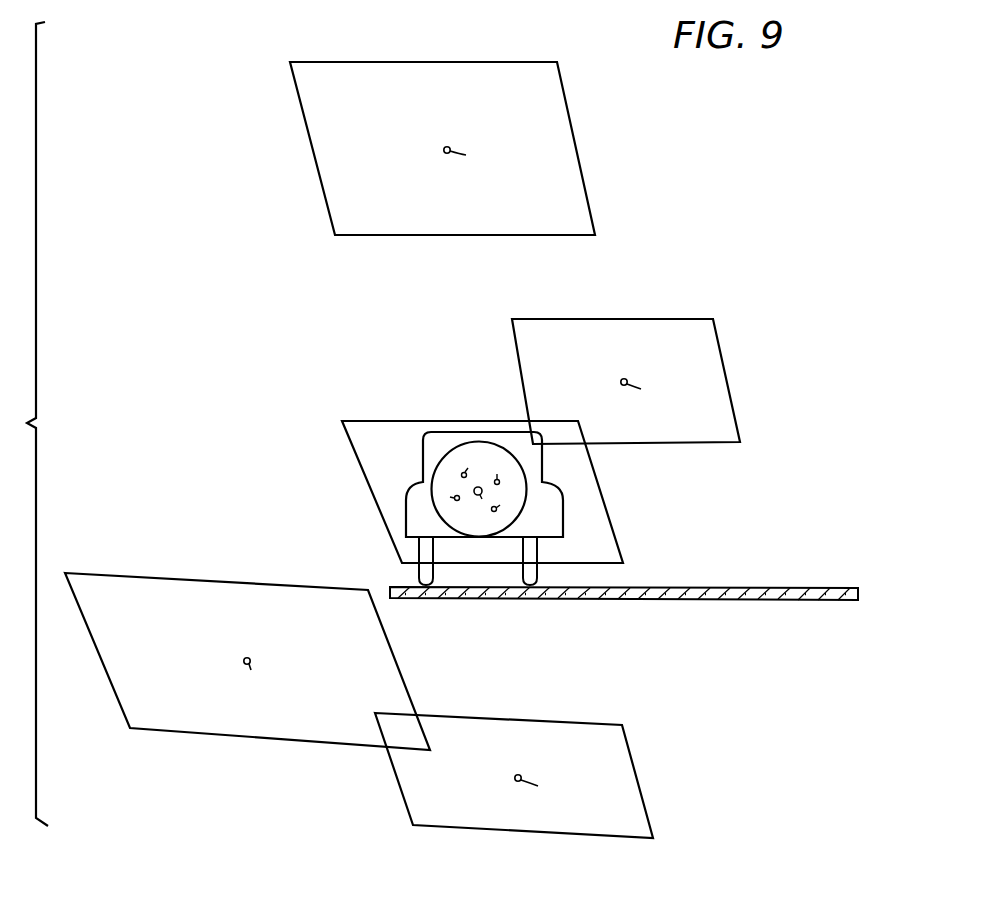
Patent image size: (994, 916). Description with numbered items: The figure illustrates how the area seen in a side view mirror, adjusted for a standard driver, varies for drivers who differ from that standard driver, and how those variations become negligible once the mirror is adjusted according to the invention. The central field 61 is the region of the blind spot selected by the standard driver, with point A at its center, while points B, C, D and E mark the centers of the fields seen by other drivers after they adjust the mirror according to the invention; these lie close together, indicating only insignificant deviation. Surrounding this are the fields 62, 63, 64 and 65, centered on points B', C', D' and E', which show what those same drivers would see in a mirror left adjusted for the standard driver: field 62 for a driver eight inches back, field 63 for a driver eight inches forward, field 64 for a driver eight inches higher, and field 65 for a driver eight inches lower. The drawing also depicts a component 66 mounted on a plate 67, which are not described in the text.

The field 61 is at (362, 476).
The field of view 62 is at (720, 347).
The field of view 63 is at (213, 737).
The field of view 64 is at (633, 760).
The field of view 65 is at (312, 150).
The lamp base 66 is at (563, 500).
The mounting plate 67 is at (786, 581).